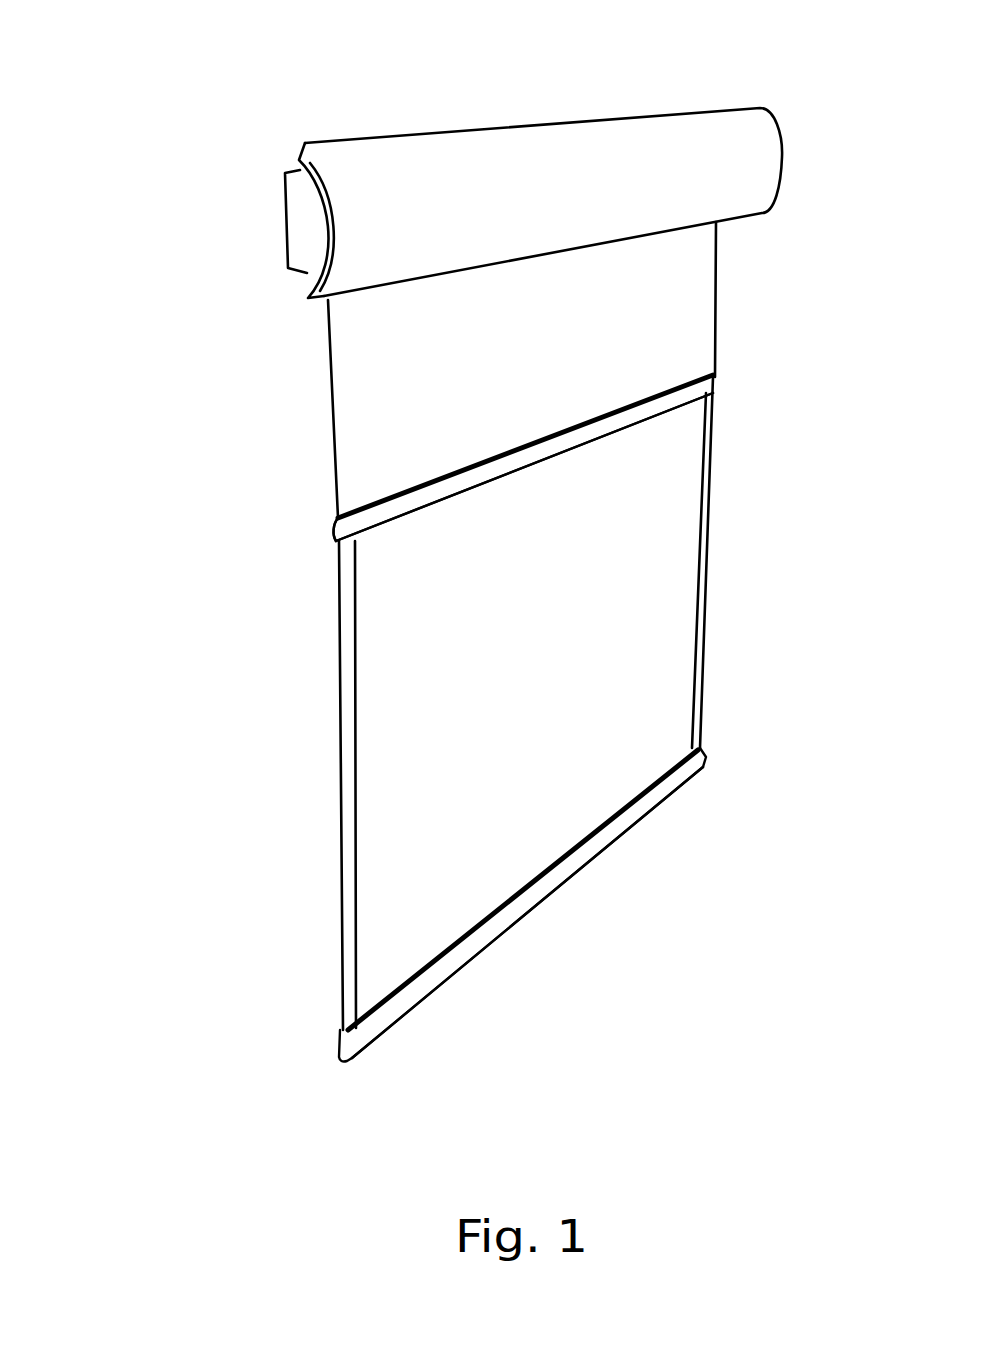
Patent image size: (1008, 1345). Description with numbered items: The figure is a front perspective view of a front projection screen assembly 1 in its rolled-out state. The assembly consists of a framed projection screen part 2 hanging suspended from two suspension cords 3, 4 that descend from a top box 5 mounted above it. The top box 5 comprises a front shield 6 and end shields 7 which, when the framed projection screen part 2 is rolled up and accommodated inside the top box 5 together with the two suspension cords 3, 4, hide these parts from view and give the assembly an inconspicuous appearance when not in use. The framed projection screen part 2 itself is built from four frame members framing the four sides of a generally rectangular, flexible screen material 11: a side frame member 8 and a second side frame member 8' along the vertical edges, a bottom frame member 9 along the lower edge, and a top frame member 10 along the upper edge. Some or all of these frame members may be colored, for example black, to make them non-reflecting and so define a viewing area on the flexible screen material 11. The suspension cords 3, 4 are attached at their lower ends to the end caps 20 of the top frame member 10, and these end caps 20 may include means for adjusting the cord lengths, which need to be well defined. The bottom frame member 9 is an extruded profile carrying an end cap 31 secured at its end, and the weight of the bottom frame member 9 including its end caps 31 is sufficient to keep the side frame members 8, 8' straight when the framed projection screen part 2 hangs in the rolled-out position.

The front projection screen assembly 1 is at (225, 670).
The framed projection screen part 2 is at (770, 580).
The suspension cord 3 is at (336, 417).
The suspension cord 4 is at (717, 305).
The top box 5 is at (374, 86).
The front shield 6 is at (627, 117).
The end shield 7 is at (284, 227).
The side frame member 8 is at (287, 785).
The side frame member 8' is at (774, 562).
The bottom frame member 9 is at (607, 847).
The top frame member 10 is at (410, 490).
The flexible screen material 11 is at (662, 467).
The end cap 20 is at (336, 531).
The end cap 31 is at (338, 1053).